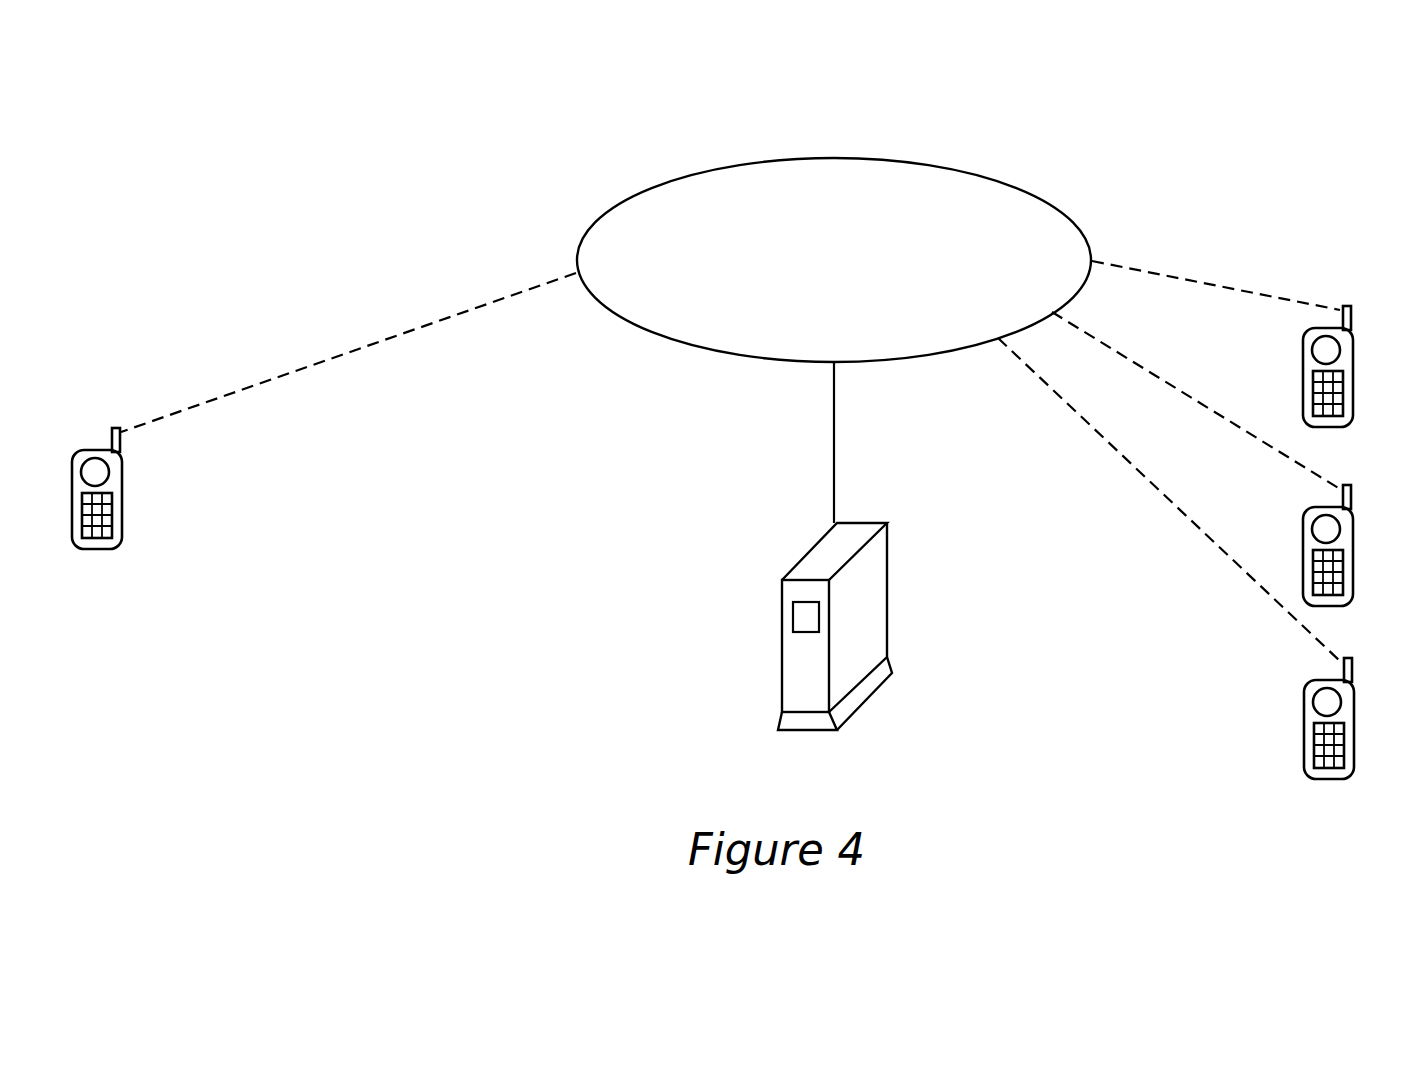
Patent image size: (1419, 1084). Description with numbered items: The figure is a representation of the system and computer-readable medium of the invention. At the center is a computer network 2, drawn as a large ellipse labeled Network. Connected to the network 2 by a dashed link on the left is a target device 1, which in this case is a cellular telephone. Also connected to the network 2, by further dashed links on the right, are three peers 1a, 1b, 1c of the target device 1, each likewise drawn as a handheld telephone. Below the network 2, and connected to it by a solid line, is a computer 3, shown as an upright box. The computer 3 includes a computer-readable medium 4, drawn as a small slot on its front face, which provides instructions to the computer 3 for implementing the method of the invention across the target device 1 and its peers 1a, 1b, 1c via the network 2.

The target device 1 is at (85, 452).
The peer 1a is at (1353, 355).
The peer 1b is at (1353, 535).
The peer 1c is at (1354, 712).
The computer network 2 is at (934, 163).
The computer 3 is at (882, 522).
The computer-readable medium 4 is at (793, 623).